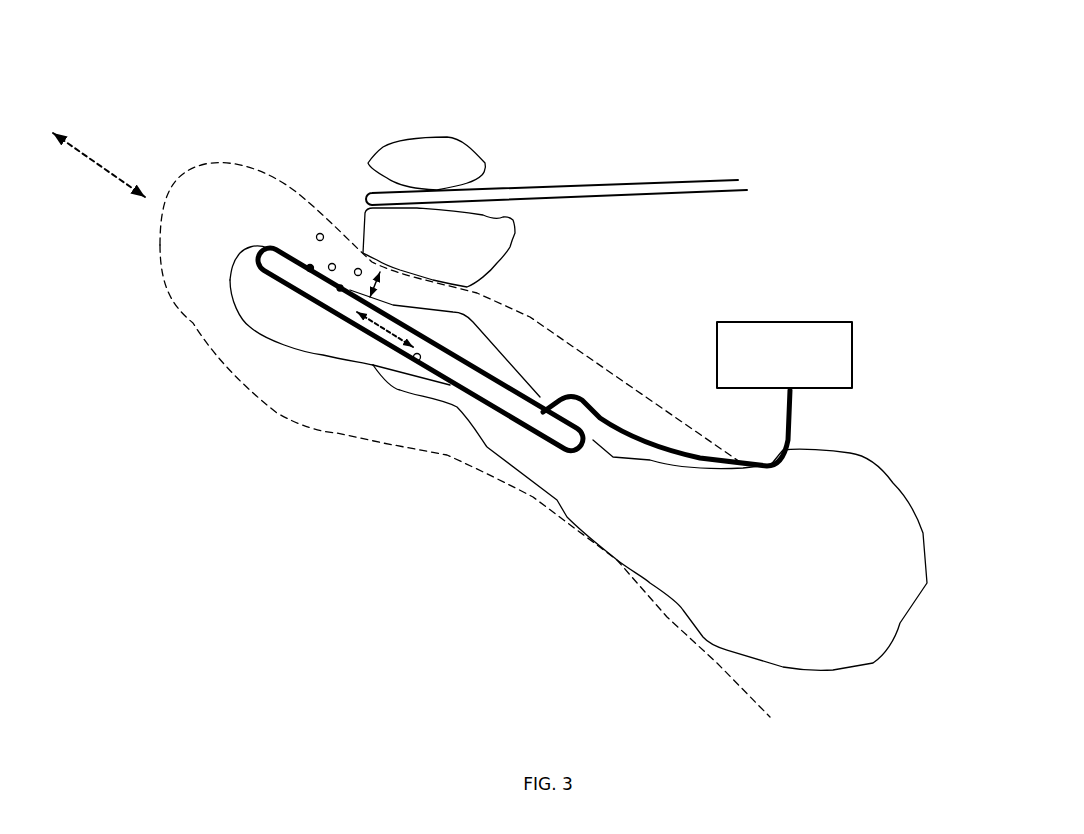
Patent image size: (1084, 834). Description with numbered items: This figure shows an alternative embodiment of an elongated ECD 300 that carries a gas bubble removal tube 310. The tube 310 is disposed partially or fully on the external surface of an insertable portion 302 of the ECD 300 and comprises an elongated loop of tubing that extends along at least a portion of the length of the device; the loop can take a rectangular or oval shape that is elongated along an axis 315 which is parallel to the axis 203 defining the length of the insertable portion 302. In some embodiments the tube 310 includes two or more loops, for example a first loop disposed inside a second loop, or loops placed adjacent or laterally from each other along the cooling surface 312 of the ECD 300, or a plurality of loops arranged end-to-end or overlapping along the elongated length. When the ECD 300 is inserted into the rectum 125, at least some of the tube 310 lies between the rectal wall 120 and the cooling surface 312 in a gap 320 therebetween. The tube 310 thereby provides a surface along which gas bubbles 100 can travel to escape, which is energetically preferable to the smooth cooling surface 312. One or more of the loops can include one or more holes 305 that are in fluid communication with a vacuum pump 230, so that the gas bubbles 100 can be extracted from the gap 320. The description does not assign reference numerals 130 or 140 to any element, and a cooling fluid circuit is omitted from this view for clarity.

The gas bubbles 100 is at (337, 252).
The rectal wall 120 is at (356, 235).
The rectum 125 is at (189, 288).
The anatomical structure 130 is at (423, 175).
The retractor 140 is at (622, 172).
The axis 203 is at (104, 140).
The vacuum pump 230 is at (769, 377).
The elongated ECD 300 is at (613, 503).
The insertable portion 302 is at (232, 260).
The holes 305 is at (310, 265).
The gas bubble removal tube 310 is at (265, 243).
The cooling surface 312 is at (413, 297).
The axis 315 is at (363, 323).
The gap 320 is at (390, 287).